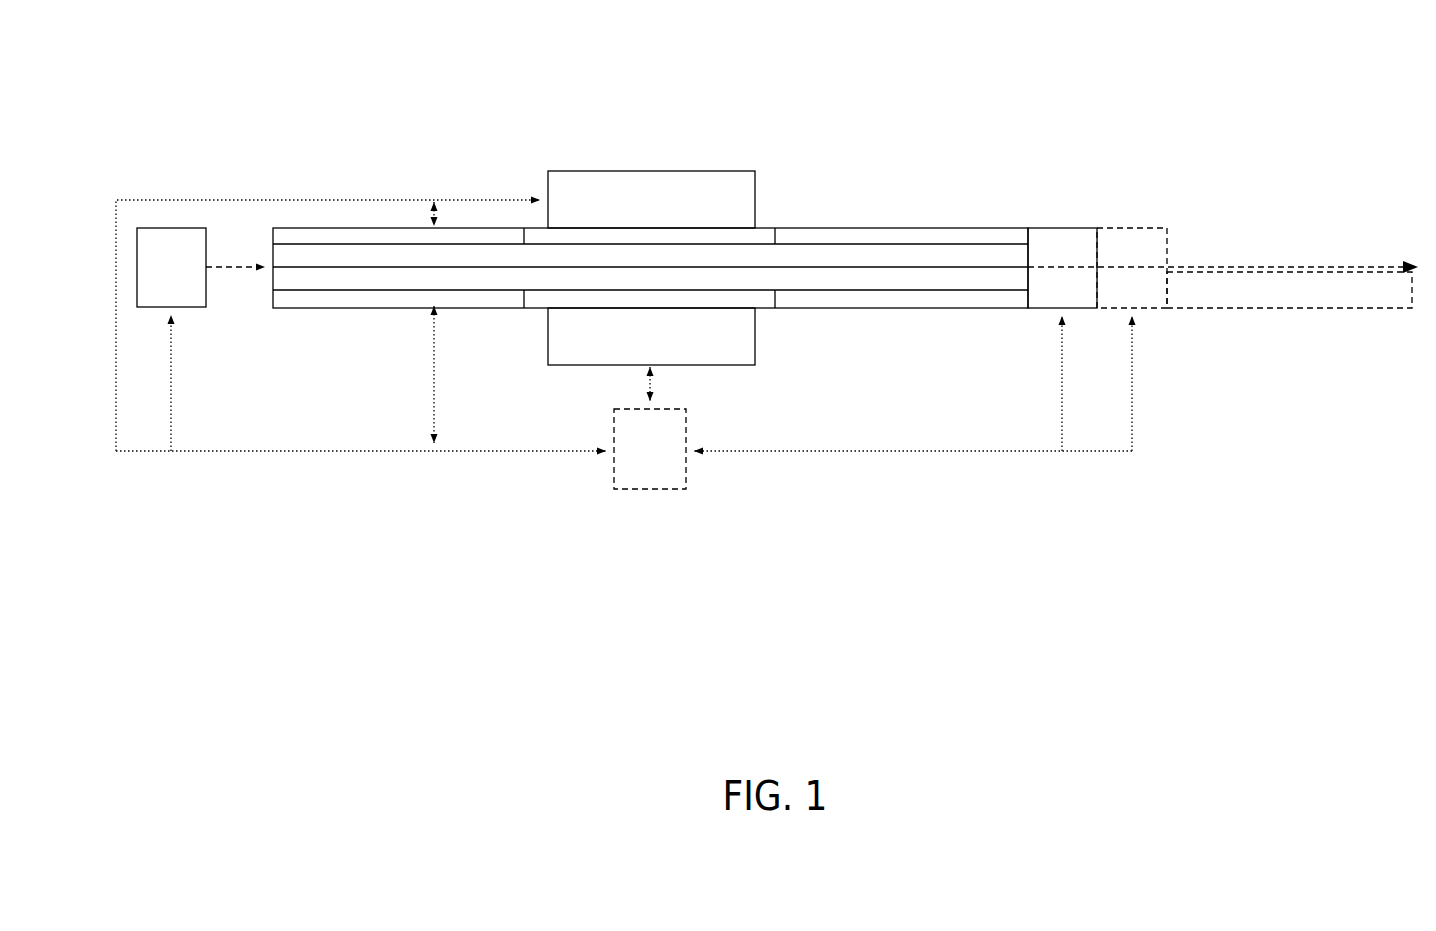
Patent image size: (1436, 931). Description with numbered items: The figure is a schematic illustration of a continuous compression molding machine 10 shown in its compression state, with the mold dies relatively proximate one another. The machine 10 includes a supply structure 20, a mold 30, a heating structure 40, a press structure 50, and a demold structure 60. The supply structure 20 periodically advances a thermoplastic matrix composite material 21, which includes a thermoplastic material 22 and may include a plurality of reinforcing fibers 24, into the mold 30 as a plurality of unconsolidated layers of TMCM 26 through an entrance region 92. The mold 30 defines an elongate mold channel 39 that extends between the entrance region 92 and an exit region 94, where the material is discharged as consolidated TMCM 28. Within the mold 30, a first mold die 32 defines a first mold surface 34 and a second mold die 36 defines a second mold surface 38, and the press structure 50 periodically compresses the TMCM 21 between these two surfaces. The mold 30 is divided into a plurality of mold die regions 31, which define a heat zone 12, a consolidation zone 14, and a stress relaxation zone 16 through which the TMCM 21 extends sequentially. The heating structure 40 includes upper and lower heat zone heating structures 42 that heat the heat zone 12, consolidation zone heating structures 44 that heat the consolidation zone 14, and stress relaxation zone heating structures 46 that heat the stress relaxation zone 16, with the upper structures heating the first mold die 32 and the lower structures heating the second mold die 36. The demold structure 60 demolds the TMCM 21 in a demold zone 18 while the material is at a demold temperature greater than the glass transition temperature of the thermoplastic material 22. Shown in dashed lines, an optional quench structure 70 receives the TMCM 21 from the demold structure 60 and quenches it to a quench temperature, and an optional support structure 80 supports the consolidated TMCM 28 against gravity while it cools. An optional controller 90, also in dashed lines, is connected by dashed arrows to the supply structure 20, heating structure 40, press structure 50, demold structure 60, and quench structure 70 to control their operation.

The continuous compression molding machine 10 is at (140, 58).
The heat zone 12 is at (313, 277).
The consolidation zone 14 is at (615, 280).
The stress relaxation zone 16 is at (905, 276).
The demold zone 18 is at (1055, 248).
The supply structure 20 is at (172, 228).
The thermoplastic matrix composite material 21 is at (223, 250).
The thermoplastic material 22 is at (228, 272).
The reinforcing fibers 24 is at (247, 272).
The unconsolidated layers of TMCM 26 is at (252, 262).
The consolidated TMCM 28 is at (1272, 262).
The mold 30 is at (348, 240).
The mold die regions 31 is at (428, 256).
The first mold die 32 is at (830, 256).
The first mold surface 34 is at (925, 272).
The second mold die 36 is at (830, 278).
The second mold surface 38 is at (962, 260).
The elongate mold channel 39 is at (1035, 274).
The heating structure 40 is at (470, 226).
The heat zone heating structure 42 is at (497, 237).
The consolidation zone heating structure 44 is at (638, 237).
The stress relaxation zone heating structure 46 is at (857, 235).
The press structure 50 is at (650, 170).
The demold structure 60 is at (1075, 222).
The quench structure 70 is at (1130, 225).
The support structure 80 is at (1278, 312).
The controller 90 is at (650, 493).
The entrance region 92 is at (285, 260).
The exit region 94 is at (1018, 260).